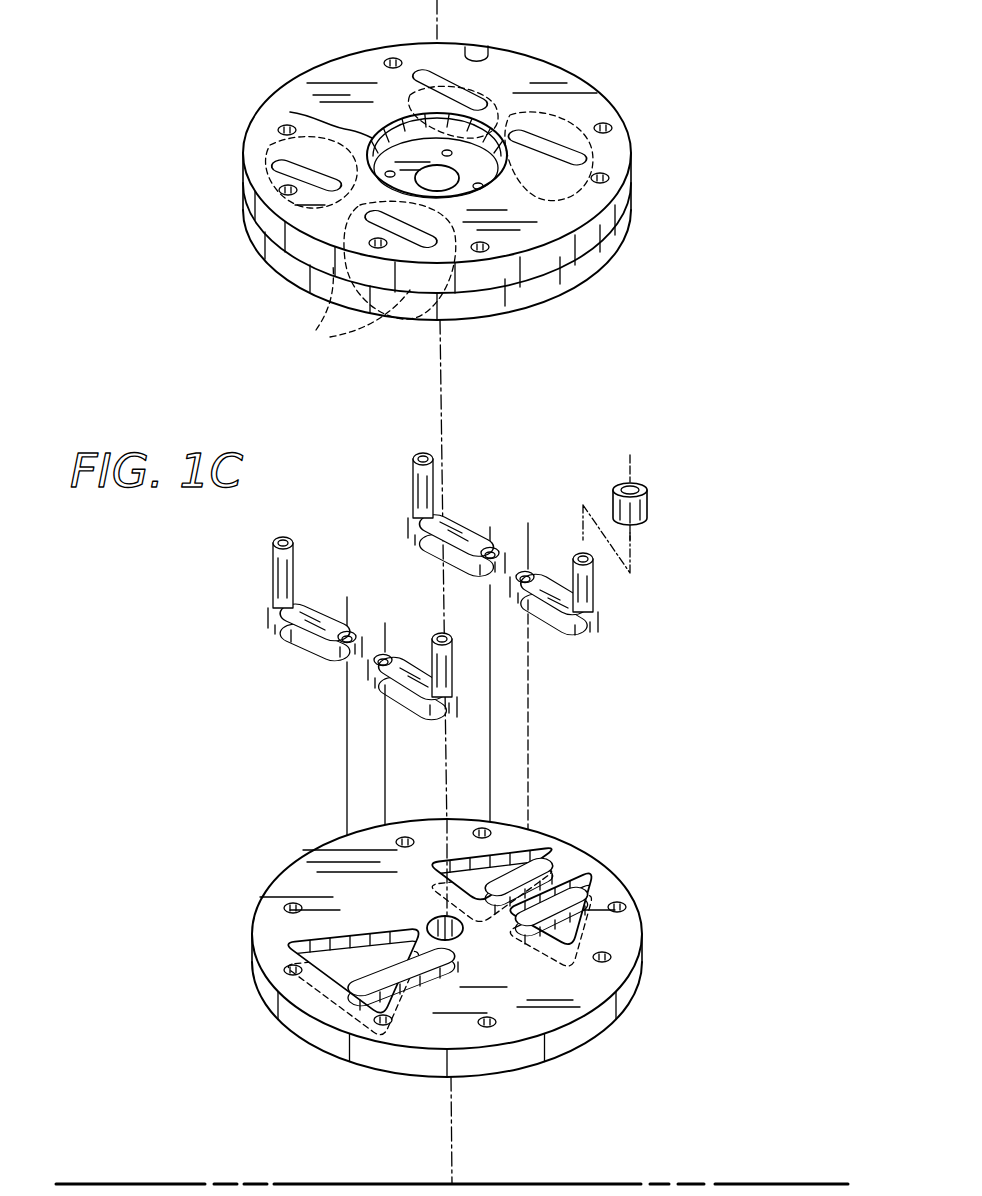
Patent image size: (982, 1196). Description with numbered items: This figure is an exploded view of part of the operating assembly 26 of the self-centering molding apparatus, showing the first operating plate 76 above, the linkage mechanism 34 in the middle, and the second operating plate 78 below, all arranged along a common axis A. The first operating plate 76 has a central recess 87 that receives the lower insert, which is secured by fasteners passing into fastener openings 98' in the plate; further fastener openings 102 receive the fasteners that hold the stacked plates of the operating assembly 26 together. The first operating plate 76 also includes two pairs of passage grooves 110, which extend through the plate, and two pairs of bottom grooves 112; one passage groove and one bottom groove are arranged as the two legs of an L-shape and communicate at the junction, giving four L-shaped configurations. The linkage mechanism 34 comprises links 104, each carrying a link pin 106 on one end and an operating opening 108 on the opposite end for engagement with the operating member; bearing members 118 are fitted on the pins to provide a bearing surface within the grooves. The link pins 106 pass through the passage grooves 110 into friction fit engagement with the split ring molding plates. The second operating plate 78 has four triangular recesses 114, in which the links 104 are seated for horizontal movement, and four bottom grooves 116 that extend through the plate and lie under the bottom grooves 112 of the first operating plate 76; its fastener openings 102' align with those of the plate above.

The operating assembly 26 is at (646, 57).
The passage grooves 110 is at (410, 68).
The recess 87 is at (500, 135).
The fastener openings 98' is at (282, 116).
The fastener openings 102 is at (500, 155).
The first operating plate 76 is at (581, 264).
The bottom grooves 112 is at (316, 330).
The central axis A is at (447, 378).
The link pins 106 is at (413, 476).
The operating opening 108 is at (490, 548).
The bearing members 118 is at (648, 497).
The links 104 is at (598, 628).
The linkage mechanism 34 is at (455, 736).
The triangular recesses 114 is at (253, 933).
The bottom grooves 116 is at (603, 866).
The second operating plate 78 is at (613, 890).
The fastener openings 102' is at (503, 927).